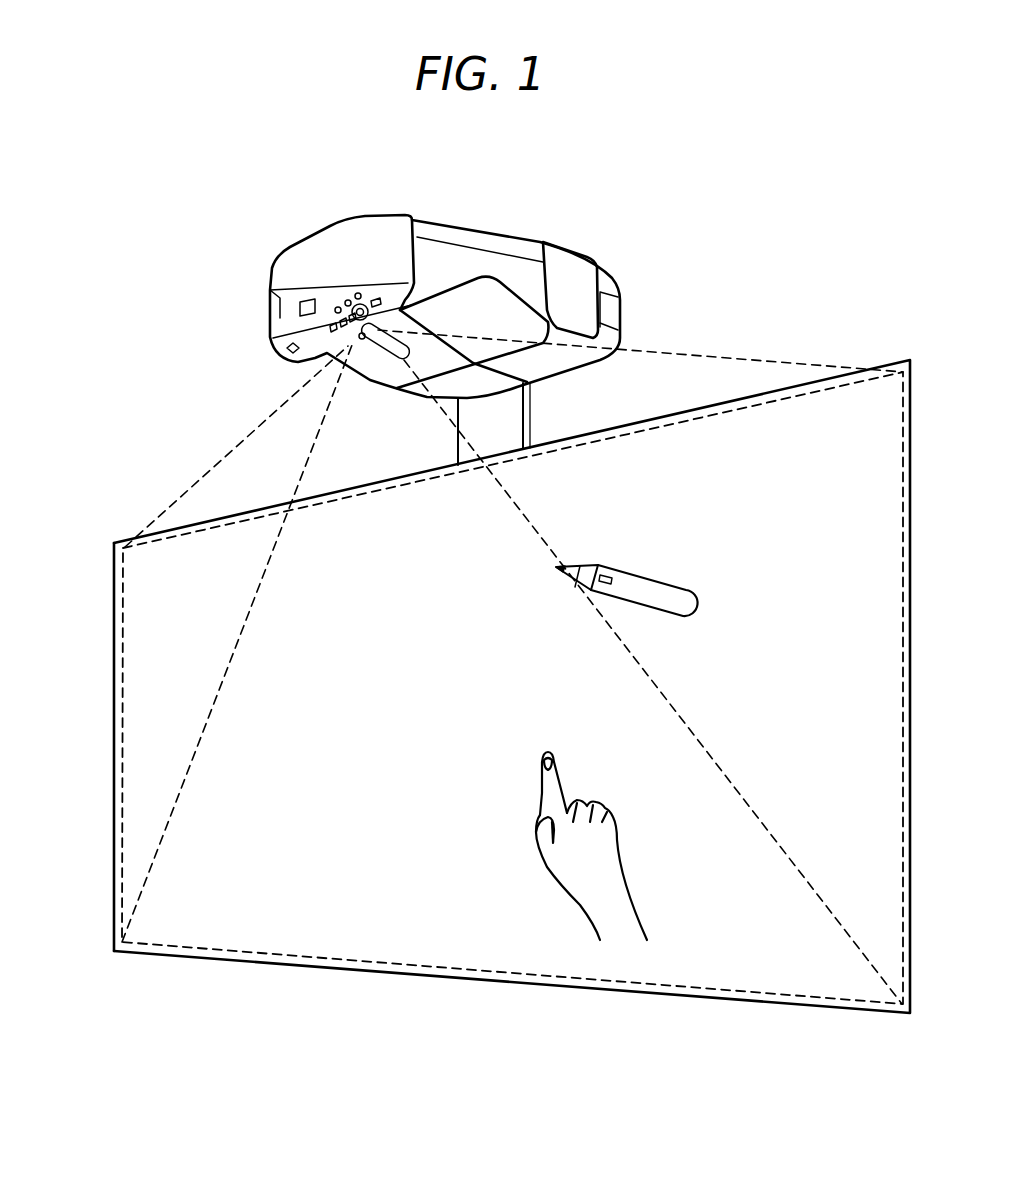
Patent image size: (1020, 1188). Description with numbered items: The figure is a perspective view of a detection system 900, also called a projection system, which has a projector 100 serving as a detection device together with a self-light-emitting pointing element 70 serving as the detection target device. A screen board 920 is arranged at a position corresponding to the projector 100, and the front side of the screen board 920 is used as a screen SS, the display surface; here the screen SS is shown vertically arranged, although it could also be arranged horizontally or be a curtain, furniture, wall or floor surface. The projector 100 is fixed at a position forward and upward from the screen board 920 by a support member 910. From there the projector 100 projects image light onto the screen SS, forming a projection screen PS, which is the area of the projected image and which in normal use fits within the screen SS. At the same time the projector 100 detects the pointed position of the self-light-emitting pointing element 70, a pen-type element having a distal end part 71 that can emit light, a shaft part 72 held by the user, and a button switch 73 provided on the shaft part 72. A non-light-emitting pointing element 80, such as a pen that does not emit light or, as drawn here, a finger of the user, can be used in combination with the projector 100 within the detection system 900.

The detection system 900 is at (150, 270).
The projector 100 is at (480, 228).
The support member 910 is at (532, 422).
The screen board 920 is at (897, 360).
The projection screen PS is at (114, 612).
The screen SS is at (114, 772).
The self-light-emitting pointing element 70 is at (637, 577).
The distal end part 71 is at (558, 565).
The shaft part 72 is at (663, 612).
The button switch 73 is at (605, 583).
The non-light-emitting pointing element 80 is at (548, 788).